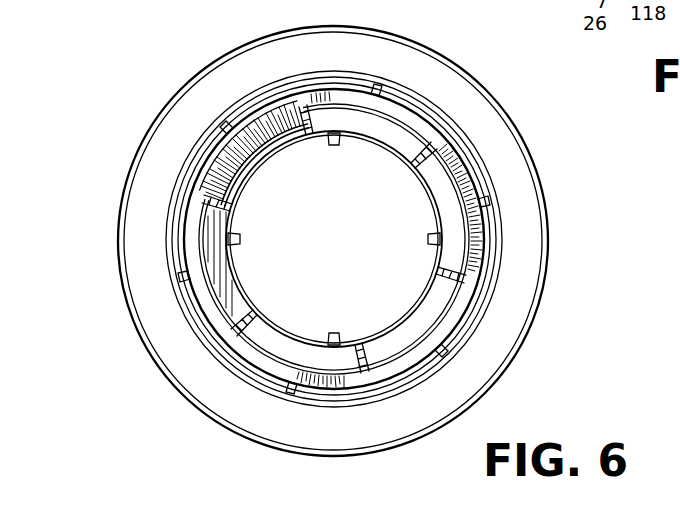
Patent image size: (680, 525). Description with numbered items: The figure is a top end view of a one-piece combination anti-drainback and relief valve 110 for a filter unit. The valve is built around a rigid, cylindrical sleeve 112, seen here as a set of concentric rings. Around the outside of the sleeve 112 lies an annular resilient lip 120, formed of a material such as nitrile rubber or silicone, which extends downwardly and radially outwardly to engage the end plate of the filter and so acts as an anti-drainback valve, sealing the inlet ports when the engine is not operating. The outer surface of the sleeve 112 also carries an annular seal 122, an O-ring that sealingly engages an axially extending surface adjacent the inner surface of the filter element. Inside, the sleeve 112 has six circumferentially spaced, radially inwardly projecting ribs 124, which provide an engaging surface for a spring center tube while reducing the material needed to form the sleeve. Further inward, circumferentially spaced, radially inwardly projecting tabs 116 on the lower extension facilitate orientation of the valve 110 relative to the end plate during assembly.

The combination anti-drainback and relief valve 110 is at (567, 222).
The sleeve 112 is at (267, 113).
The tabs 116 is at (240, 242).
The lip 120 is at (142, 254).
The seal 122 is at (188, 325).
The ribs 124 is at (215, 188).